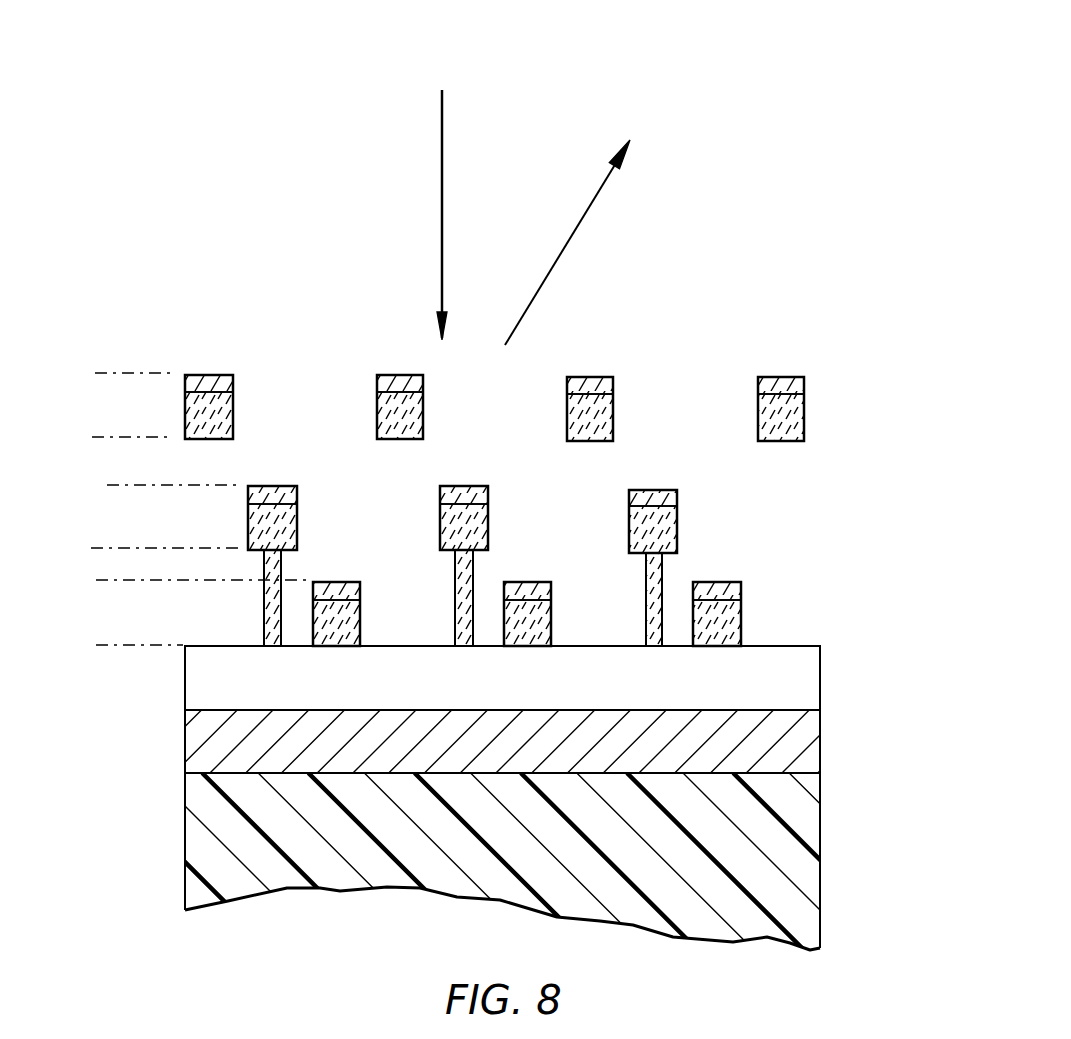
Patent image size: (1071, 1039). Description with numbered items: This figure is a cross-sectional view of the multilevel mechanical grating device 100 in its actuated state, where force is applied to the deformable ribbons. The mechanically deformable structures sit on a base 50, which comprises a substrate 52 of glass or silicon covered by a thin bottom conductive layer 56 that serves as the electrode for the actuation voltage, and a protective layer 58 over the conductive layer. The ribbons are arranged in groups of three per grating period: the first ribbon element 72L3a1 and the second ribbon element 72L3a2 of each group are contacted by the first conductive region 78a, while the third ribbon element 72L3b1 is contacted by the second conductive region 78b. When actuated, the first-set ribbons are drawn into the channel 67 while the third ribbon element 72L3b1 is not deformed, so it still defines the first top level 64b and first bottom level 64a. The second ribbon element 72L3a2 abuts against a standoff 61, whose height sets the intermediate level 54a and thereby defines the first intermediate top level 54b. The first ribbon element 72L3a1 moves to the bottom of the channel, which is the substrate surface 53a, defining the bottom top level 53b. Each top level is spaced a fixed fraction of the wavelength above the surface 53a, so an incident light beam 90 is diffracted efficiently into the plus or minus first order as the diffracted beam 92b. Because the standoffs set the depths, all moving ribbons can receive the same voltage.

The base 50 is at (528, 809).
The substrate 52 is at (812, 832).
The bottom conductive layer 56 is at (815, 745).
The protective layer 58 is at (812, 687).
The standoff 61 is at (645, 580).
The first bottom level 64a is at (103, 436).
The first top level 64b is at (95, 373).
The height of the intermediate level 54a is at (112, 548).
The first intermediate top level 54b is at (107, 485).
The surface of the substrate 53a is at (115, 645).
The bottom top level 53b is at (115, 580).
The channel 67 is at (745, 522).
The first ribbon element 72L3a1 is at (733, 623).
The second ribbon element 72L3a2 is at (668, 512).
The third ribbon element 72L3b1 is at (659, 386).
The first conductive region 78a is at (652, 495).
The second conductive region 78b is at (590, 378).
The incident light beam 90 is at (442, 214).
The diffracted beam 92b is at (592, 202).
The multilevel mechanical grating device 100 is at (716, 122).